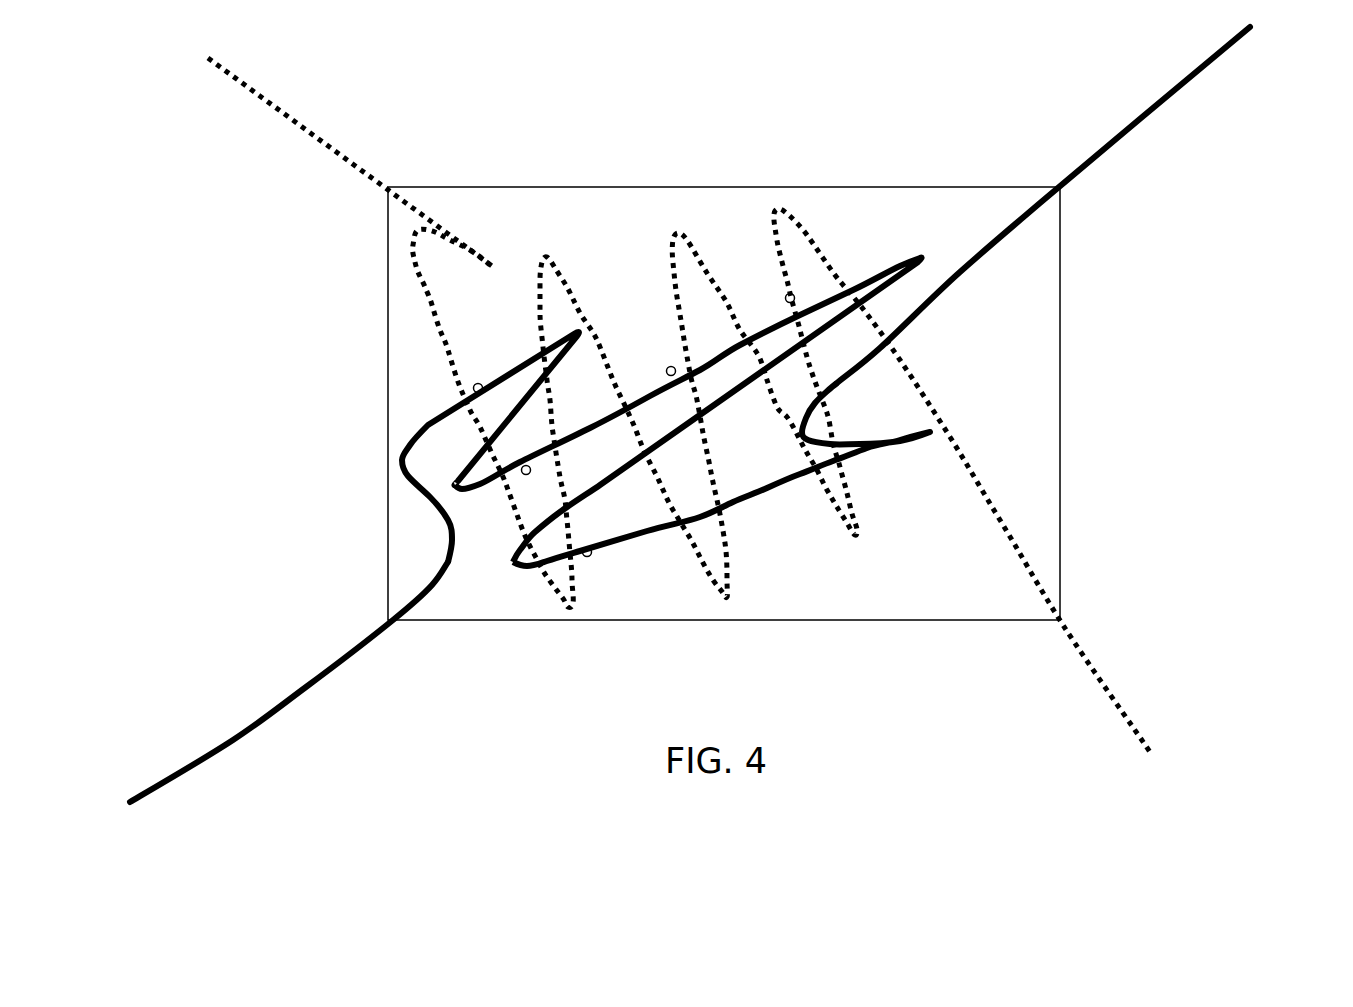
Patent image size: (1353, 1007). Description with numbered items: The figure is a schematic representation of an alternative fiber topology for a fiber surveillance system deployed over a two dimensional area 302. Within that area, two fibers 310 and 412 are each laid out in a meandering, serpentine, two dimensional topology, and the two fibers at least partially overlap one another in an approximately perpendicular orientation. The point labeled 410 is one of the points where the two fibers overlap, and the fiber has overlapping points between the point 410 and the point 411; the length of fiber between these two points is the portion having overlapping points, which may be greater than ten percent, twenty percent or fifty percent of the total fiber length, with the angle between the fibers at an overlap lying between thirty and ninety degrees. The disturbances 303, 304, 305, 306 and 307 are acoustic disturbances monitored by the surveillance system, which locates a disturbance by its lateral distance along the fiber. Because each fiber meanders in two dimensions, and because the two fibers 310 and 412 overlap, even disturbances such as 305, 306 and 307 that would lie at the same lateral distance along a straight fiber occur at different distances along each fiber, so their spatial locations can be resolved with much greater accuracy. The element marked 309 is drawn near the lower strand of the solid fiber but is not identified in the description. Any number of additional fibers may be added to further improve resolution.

The two dimensional area 302 is at (1062, 405).
The disturbance 303 is at (767, 291).
The disturbance 304 is at (654, 358).
The disturbance 305 is at (527, 485).
The disturbance 306 is at (468, 373).
The disturbance 307 is at (599, 568).
The coil segment 309 is at (727, 513).
The fiber 310 is at (1180, 112).
The overlap point 410 is at (893, 340).
The overlap point 411 is at (447, 392).
The fiber 412 is at (1180, 775).